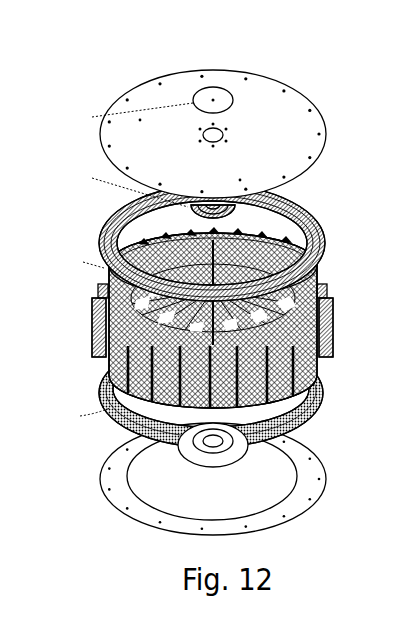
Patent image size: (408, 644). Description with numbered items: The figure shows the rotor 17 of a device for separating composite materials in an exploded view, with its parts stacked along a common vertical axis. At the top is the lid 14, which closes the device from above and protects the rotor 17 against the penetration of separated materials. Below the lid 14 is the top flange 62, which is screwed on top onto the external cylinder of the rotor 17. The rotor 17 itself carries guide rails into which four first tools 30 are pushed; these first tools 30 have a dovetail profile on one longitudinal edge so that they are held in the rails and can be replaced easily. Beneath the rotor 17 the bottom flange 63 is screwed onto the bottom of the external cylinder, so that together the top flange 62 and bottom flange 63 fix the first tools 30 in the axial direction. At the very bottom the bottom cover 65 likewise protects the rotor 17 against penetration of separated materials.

The lid 14 is at (297, 128).
The top flange 62 is at (317, 207).
The rotor 17 is at (322, 280).
The first tools 30 is at (330, 320).
The bottom flange 63 is at (325, 397).
The bottom cover 65 is at (323, 470).